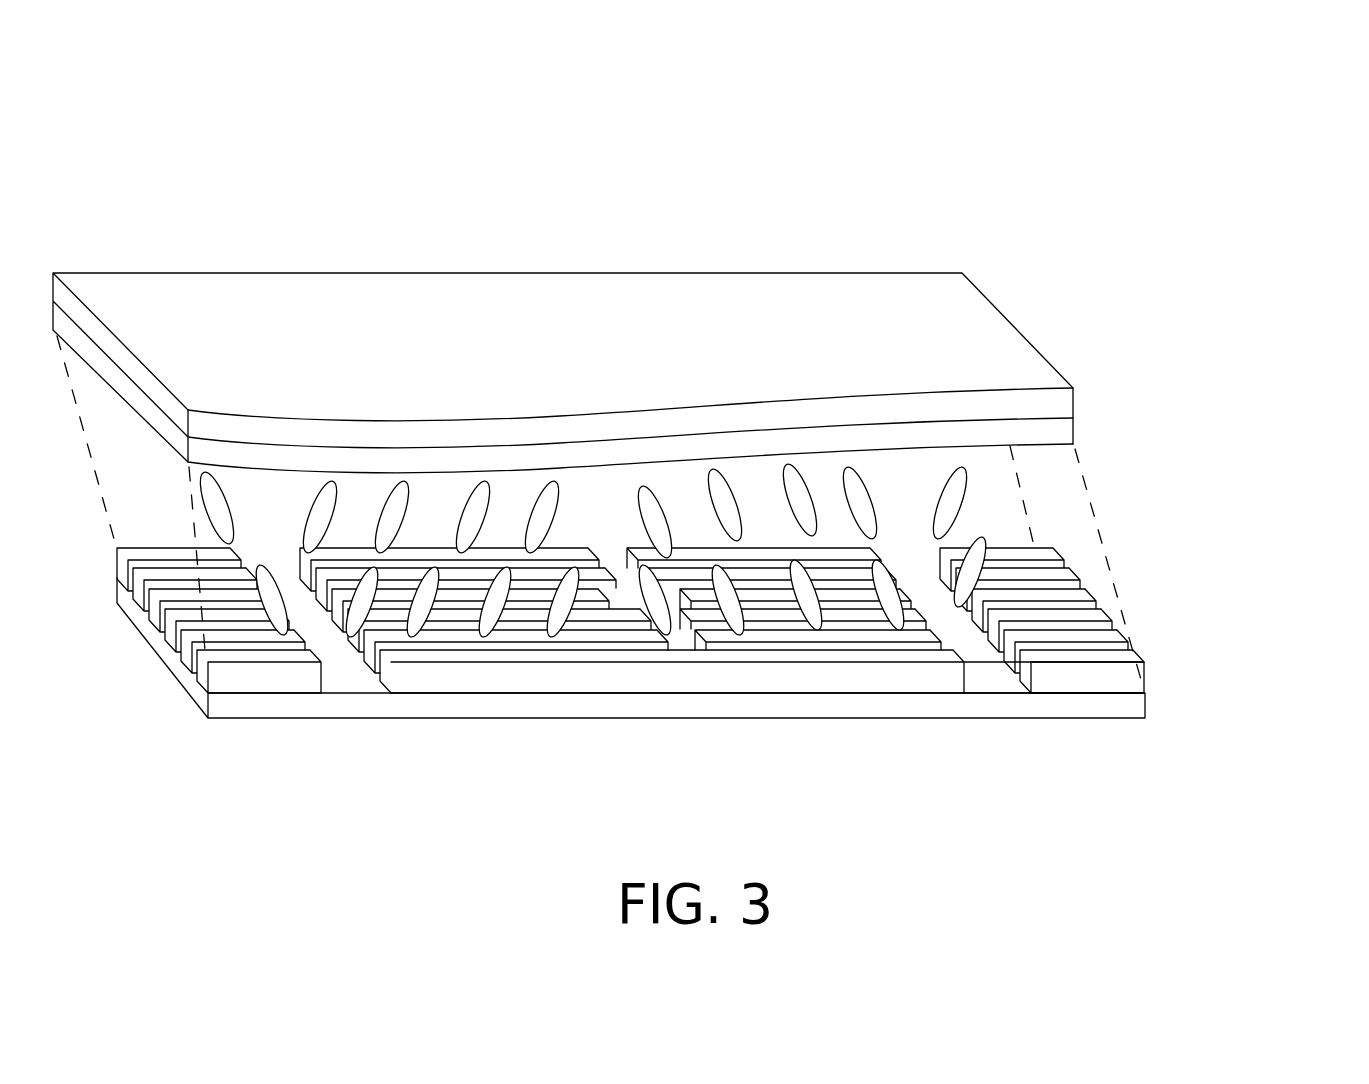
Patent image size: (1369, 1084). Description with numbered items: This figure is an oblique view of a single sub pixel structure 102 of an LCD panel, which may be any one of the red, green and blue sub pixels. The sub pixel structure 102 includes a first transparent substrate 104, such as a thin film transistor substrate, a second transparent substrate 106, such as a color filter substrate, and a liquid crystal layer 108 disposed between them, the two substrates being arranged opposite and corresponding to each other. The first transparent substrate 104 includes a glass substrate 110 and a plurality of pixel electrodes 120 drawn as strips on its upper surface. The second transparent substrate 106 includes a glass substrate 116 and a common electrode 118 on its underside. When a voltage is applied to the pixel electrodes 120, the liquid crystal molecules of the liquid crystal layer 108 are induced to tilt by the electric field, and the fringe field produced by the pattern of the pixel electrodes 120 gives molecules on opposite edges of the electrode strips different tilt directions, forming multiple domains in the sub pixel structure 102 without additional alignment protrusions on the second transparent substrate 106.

The sub pixel structure 102 is at (1028, 140).
The first transparent substrate 104 is at (1262, 600).
The second transparent substrate 106 is at (1193, 325).
The liquid crystal layer 108 is at (1100, 548).
The glass substrate 110 is at (1136, 710).
The glass substrate 116 is at (1066, 403).
The common electrode 118 is at (1066, 436).
The pixel electrodes 120 is at (1136, 678).